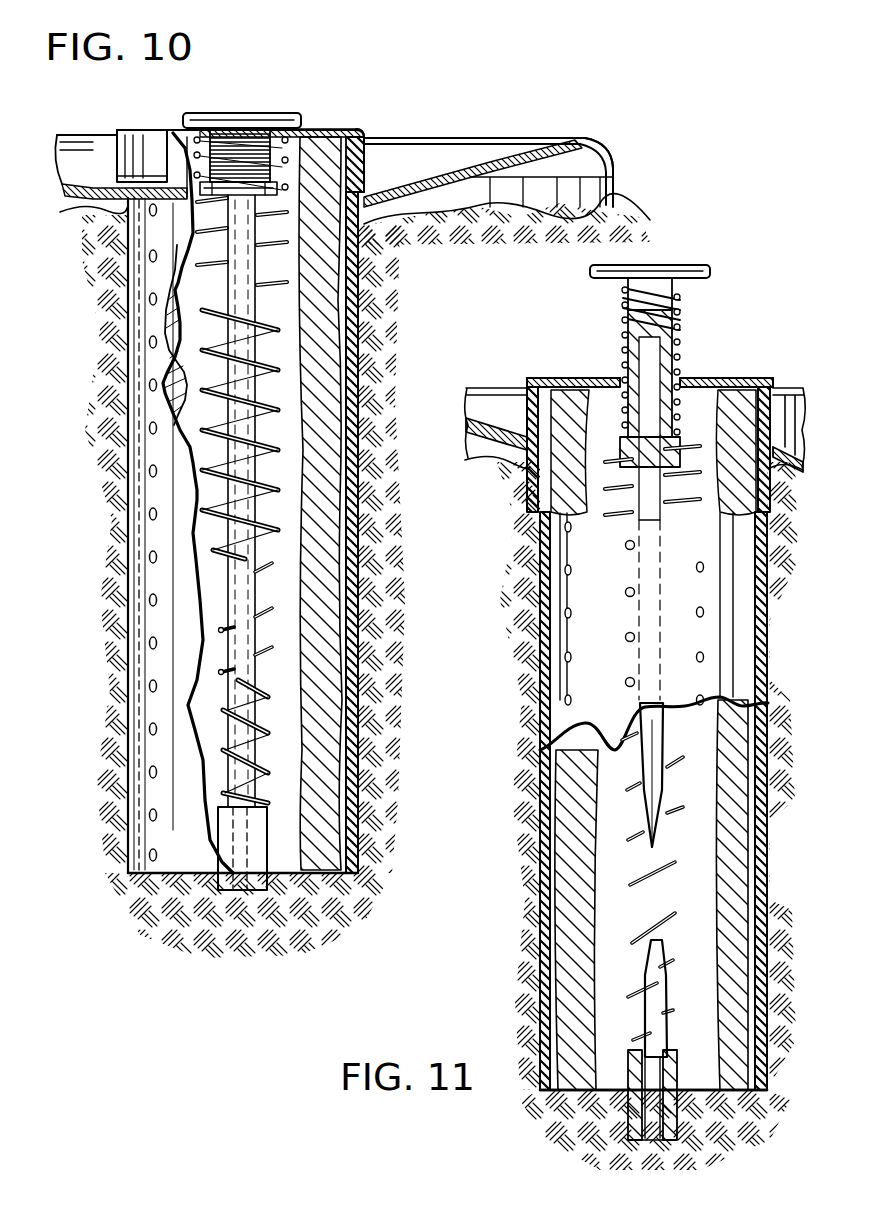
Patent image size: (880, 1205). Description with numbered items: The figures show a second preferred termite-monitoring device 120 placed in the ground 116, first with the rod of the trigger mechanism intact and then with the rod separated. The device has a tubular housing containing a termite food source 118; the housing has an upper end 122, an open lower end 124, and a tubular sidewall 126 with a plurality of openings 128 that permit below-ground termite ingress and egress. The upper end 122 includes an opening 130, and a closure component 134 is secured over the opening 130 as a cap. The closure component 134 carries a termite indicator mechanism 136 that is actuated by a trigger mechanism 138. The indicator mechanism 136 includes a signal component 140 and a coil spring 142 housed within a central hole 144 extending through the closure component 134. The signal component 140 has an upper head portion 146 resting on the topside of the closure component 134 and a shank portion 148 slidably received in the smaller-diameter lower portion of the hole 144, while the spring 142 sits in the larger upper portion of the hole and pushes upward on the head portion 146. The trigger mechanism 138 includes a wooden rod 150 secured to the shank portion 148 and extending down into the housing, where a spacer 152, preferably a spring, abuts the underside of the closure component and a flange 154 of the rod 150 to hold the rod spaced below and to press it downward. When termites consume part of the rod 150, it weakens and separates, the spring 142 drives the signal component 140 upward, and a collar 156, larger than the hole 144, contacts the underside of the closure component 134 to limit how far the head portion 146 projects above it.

In FIG. 10, the ground 116 is at (444, 248).
In FIG. 11, the ground 116 is at (516, 548).
In FIG. 10, the termite food source 118 is at (332, 584).
In FIG. 11, the termite food source 118 is at (565, 763).
In FIG. 10, the termite-monitoring device 120 is at (602, 105).
In FIG. 11, the termite-monitoring device 120 is at (500, 943).
In FIG. 10, the upper end 122 is at (622, 156).
In FIG. 11, the upper end 122 is at (488, 378).
In FIG. 10, the lower end 124 is at (177, 882).
In FIG. 11, the lower end 124 is at (583, 1107).
In FIG. 10, the tubular sidewall 126 is at (125, 558).
In FIG. 11, the tubular sidewall 126 is at (536, 664).
In FIG. 10, the openings 128 is at (153, 640).
In FIG. 11, the openings 128 is at (568, 622).
In FIG. 10, the opening 130 is at (325, 145).
In FIG. 11, the opening 130 is at (553, 410).
In FIG. 10, the closure component 134 is at (128, 128).
In FIG. 11, the closure component 134 is at (736, 372).
In FIG. 10, the termite indicator mechanism 136 is at (355, 112).
In FIG. 11, the termite indicator mechanism 136 is at (756, 290).
In FIG. 10, the trigger mechanism 138 is at (258, 390).
In FIG. 11, the trigger mechanism 138 is at (628, 764).
In FIG. 10, the signal component 140 is at (292, 112).
In FIG. 11, the signal component 140 is at (712, 258).
In FIG. 10, the coil spring 142 is at (272, 150).
In FIG. 11, the coil spring 142 is at (622, 288).
In FIG. 10, the central hole 144 is at (223, 140).
In FIG. 11, the central hole 144 is at (628, 370).
In FIG. 10, the upper head portion 146 is at (242, 113).
In FIG. 11, the upper head portion 146 is at (680, 240).
In FIG. 10, the shank portion 148 is at (292, 200).
In FIG. 11, the shank portion 148 is at (682, 303).
In FIG. 10, the rod 150 is at (223, 490).
In FIG. 11, the rod 150 is at (627, 735).
In FIG. 10, the spacer 152 is at (228, 518).
In FIG. 11, the spacer 152 is at (628, 884).
In FIG. 10, the flange 154 is at (268, 806).
In FIG. 11, the flange 154 is at (628, 1053).
In FIG. 10, the collar 156 is at (286, 292).
In FIG. 11, the collar 156 is at (615, 448).